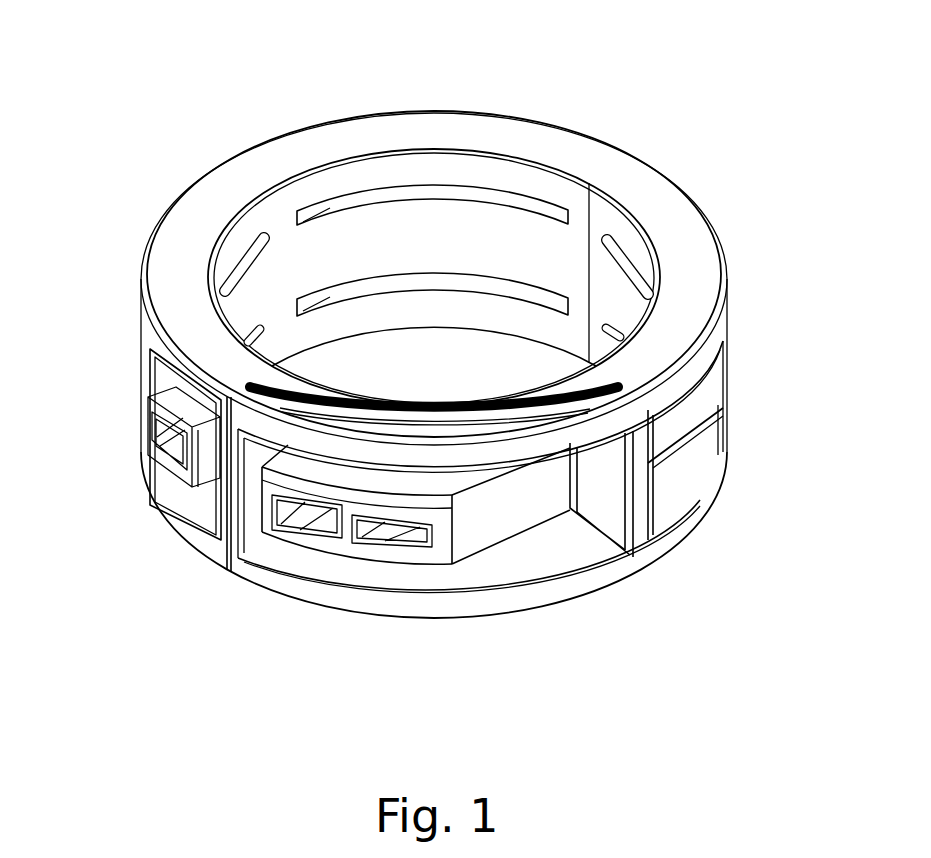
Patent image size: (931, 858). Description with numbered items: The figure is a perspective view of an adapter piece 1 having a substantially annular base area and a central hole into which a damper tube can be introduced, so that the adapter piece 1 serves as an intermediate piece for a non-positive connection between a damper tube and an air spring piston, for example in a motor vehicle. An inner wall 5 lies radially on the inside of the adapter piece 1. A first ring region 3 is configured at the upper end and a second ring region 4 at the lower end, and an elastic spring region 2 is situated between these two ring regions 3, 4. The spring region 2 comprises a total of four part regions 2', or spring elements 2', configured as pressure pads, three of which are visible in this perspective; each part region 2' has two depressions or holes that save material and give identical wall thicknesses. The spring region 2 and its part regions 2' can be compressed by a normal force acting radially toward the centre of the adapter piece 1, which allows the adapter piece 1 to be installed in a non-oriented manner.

The adapter piece 1 is at (124, 69).
The elastic spring region 2 is at (292, 543).
The part regions 2' is at (438, 538).
The first ring region 3 is at (172, 250).
The second ring region 4 is at (361, 604).
The inner wall 5 is at (485, 238).